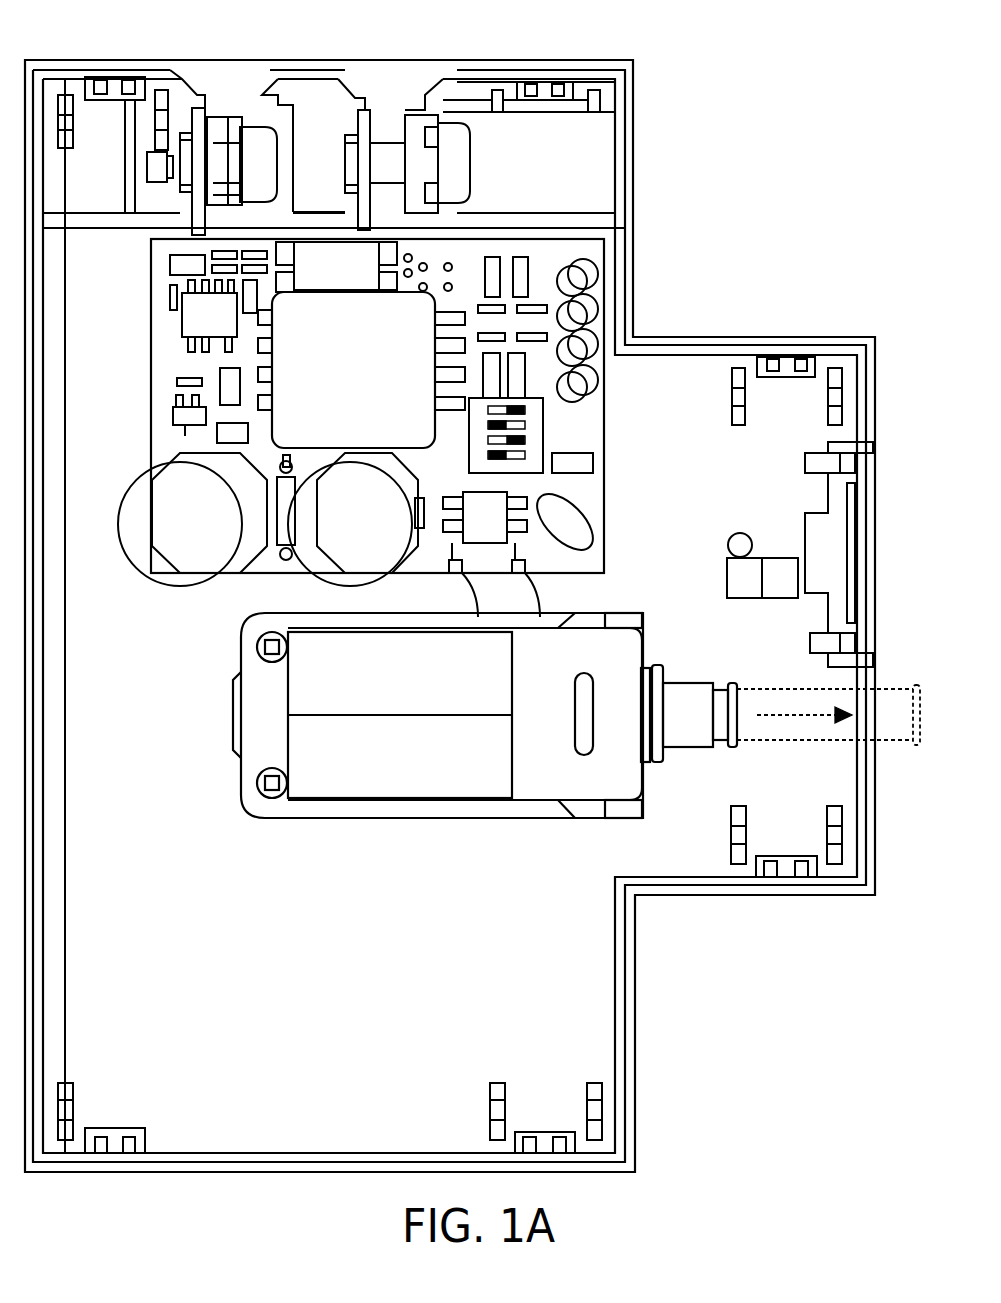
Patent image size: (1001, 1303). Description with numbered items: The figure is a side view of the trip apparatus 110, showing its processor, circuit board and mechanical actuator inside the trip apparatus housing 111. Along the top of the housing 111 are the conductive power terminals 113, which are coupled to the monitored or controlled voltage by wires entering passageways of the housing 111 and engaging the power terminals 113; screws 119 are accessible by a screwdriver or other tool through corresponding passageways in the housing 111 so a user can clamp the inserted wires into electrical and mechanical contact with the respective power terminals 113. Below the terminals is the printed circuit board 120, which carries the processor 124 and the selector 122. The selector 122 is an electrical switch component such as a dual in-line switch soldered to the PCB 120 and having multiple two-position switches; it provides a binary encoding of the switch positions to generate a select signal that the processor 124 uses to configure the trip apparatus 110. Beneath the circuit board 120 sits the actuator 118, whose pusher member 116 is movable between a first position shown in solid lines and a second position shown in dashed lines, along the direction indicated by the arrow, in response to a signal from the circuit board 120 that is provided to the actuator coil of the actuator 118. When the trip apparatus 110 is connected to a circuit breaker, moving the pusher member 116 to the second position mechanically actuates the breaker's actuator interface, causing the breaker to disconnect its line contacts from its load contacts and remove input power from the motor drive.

The trip apparatus 110 is at (762, 86).
The trip apparatus housing 111 is at (635, 275).
The power terminal 113 is at (201, 110).
The pusher member 116 is at (722, 685).
The actuator 118 is at (241, 667).
The screw 119 is at (254, 123).
The printed circuit board 120 is at (605, 440).
The selector 122 is at (548, 438).
The processor 124 is at (358, 402).